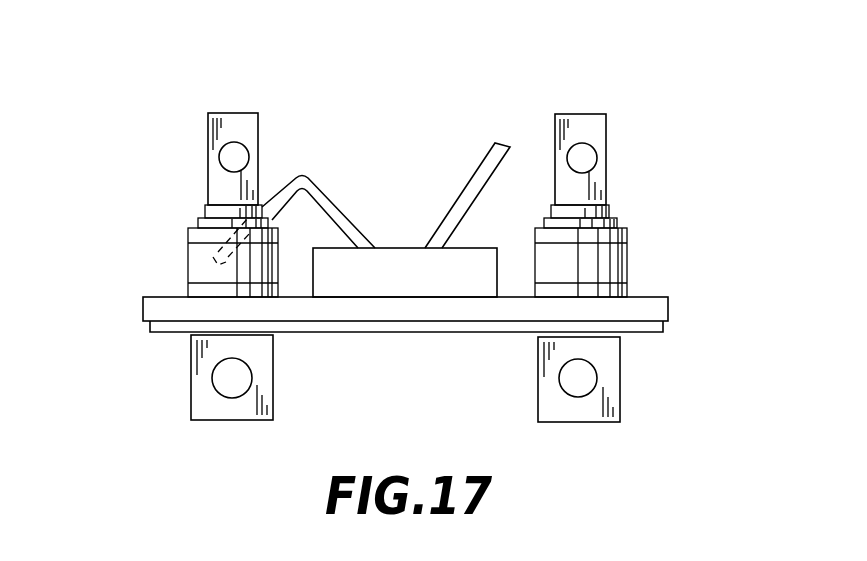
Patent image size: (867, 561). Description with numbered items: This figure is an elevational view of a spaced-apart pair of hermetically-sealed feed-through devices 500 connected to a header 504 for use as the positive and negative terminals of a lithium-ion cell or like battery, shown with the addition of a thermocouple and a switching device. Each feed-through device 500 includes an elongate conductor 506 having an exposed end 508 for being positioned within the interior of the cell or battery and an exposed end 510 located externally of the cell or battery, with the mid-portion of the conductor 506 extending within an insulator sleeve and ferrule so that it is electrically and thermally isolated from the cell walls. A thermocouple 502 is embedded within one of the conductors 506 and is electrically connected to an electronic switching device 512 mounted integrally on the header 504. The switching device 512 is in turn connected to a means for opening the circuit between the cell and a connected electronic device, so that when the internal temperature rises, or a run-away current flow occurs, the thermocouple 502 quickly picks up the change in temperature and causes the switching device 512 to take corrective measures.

The feed-through device 500 is at (233, 113).
The thermocouple 502 is at (222, 258).
The header 504 is at (667, 308).
The conductor 506 is at (208, 153).
The exposed end 508 is at (267, 369).
The exposed end 510 is at (260, 133).
The electronic switching device 512 is at (393, 257).